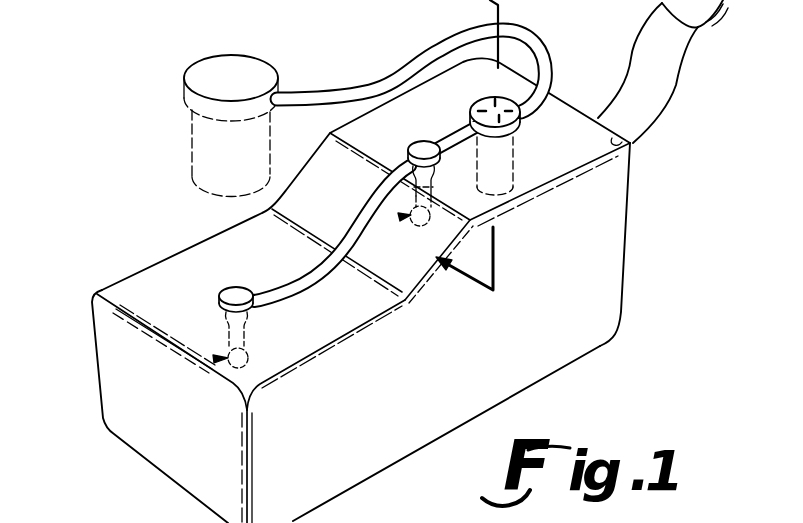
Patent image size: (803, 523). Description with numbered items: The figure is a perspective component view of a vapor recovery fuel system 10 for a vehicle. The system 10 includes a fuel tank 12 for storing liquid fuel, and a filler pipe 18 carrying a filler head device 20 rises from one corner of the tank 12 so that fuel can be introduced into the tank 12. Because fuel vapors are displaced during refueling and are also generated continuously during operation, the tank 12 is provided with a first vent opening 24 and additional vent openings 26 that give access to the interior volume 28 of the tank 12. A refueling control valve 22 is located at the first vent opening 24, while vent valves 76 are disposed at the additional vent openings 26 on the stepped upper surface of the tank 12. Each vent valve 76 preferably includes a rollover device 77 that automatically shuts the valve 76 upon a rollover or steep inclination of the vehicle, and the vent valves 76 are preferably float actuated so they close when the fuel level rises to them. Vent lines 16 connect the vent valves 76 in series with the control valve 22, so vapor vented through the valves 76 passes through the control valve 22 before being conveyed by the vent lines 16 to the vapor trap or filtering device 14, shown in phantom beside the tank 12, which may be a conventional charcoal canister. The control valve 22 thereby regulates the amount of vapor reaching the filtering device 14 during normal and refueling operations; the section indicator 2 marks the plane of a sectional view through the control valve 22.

The vapor recovery fuel system 10 is at (102, 158).
The fuel tank 12 is at (630, 262).
The vapor trap or filtering device 14 is at (203, 189).
The vent lines 16 is at (346, 92).
The filler pipe 18 is at (672, 88).
The filler head device 20 is at (719, 24).
The control valve 22 is at (489, 97).
The first vent opening 24 is at (520, 124).
The additional vent openings 26 is at (435, 170).
The interior volume 28 is at (467, 390).
The vent valves 76 is at (423, 142).
The rollover device 77 is at (399, 221).
The section line 2 is at (458, 8).